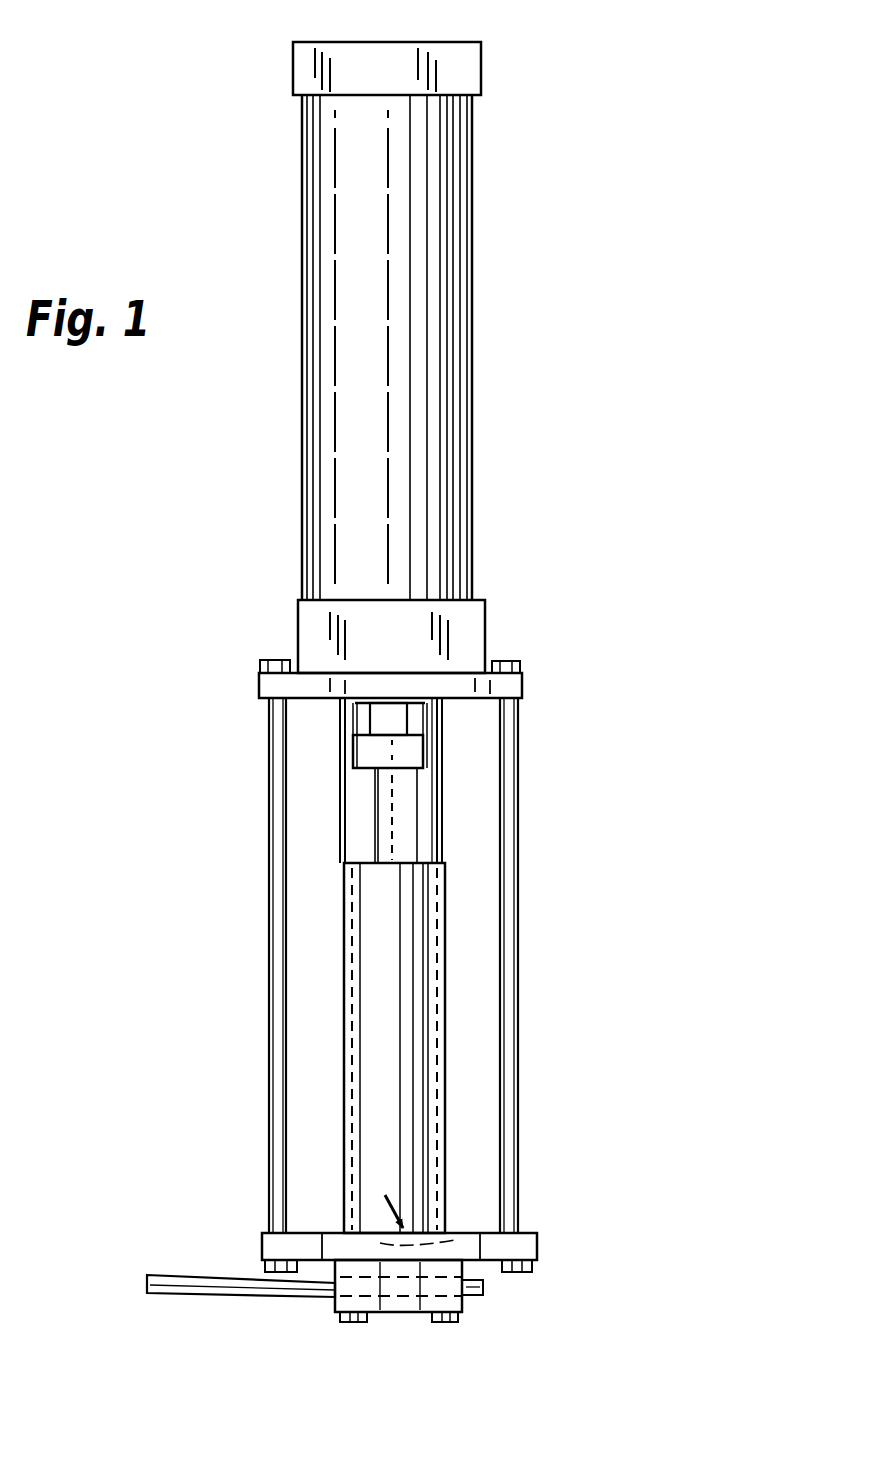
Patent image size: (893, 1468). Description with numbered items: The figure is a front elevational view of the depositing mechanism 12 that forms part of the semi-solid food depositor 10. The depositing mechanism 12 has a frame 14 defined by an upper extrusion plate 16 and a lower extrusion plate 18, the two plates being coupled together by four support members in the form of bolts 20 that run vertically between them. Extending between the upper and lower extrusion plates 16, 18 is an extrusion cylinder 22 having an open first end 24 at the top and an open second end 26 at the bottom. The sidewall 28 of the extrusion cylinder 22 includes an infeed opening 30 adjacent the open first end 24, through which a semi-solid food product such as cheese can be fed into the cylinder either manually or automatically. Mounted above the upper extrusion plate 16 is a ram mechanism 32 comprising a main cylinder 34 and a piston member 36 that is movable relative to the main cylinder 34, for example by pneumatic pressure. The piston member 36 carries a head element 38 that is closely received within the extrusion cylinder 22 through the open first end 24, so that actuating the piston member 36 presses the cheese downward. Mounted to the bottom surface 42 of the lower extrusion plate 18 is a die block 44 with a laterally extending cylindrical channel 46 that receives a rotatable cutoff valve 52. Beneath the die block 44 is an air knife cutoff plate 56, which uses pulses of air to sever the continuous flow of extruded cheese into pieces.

The semi-solid food depositor 10 is at (548, 224).
The depositing mechanism 12 is at (528, 681).
The frame 14 is at (522, 698).
The upper extrusion plate 16 is at (325, 680).
The lower extrusion plate 18 is at (262, 1245).
The bolts 20 is at (272, 865).
The extrusion cylinder 22 is at (448, 1107).
The open first end 24 is at (432, 696).
The open second end 26 is at (478, 1238).
The sidewall 28 is at (445, 983).
The infeed opening 30 is at (400, 812).
The ram mechanism 32 is at (476, 171).
The main cylinder 34 is at (472, 347).
The piston member 36 is at (374, 728).
The head element 38 is at (355, 762).
The bottom surface 42 is at (500, 1262).
The die block 44 is at (478, 1290).
The cylindrical channel 46 is at (338, 1292).
The rotatable cutoff valve 52 is at (155, 1293).
The air knife cutoff plate 56 is at (395, 1315).